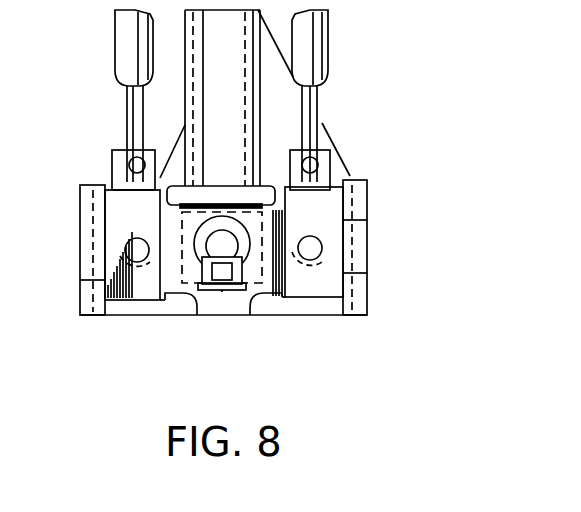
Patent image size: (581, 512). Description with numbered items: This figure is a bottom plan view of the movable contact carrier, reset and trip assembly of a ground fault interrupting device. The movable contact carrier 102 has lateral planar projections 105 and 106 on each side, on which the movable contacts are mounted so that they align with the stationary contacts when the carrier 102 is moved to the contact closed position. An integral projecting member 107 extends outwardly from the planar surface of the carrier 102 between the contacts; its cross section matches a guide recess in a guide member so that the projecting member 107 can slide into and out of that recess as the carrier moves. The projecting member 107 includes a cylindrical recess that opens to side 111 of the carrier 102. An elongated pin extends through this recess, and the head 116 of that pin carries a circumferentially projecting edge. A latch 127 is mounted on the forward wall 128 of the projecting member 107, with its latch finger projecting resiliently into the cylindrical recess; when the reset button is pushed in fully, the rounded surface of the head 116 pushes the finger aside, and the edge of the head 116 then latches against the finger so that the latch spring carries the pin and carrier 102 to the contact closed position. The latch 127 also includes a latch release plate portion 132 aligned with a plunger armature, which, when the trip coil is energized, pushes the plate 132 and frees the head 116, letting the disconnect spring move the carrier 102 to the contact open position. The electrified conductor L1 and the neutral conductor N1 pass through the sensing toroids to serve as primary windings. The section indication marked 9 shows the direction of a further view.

The electrified conductor L1 is at (132, 105).
The neutral conductor N1 is at (313, 98).
The lateral planar projection 105 is at (110, 273).
The lateral planar projection 106 is at (328, 285).
The projecting member 107 is at (390, 206).
The head 116 is at (305, 240).
The latch release plate portion 132 is at (218, 243).
The movable contact carrier 102 is at (188, 268).
The latch 127 is at (217, 292).
The side 111 is at (280, 285).
The forward wall 128 is at (225, 322).
The section line for FIG. 9 is at (169, 395).